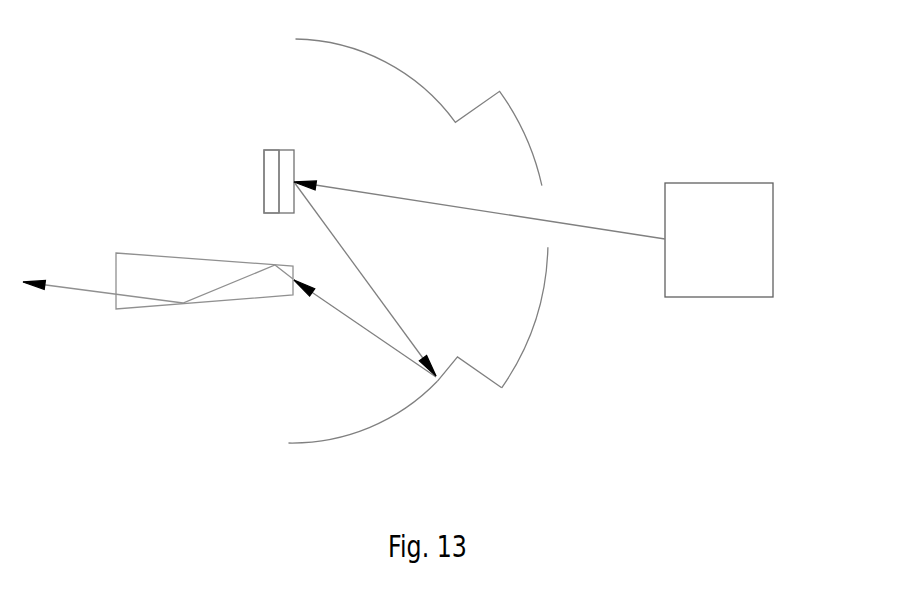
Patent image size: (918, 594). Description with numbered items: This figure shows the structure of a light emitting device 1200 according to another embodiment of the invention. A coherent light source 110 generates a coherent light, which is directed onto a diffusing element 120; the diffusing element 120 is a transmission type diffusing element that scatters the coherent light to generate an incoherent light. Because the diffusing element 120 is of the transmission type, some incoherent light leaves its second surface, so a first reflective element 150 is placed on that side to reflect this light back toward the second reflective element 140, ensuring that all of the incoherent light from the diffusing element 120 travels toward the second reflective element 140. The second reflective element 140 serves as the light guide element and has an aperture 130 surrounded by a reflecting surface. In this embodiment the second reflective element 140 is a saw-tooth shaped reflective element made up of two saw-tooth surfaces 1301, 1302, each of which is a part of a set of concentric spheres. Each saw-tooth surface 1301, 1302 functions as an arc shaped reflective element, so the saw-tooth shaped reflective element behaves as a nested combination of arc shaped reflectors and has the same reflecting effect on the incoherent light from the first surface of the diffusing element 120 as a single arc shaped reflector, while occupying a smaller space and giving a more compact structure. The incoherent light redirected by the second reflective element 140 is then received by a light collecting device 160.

The light emitting device 1200 is at (398, 263).
The coherent light source 110 is at (718, 297).
The diffusing element 120 is at (287, 150).
The first reflective element 150 is at (264, 180).
The aperture 130 is at (548, 233).
The second reflective element 140 is at (549, 362).
The saw-tooth surface 1301 is at (399, 410).
The saw-tooth surface 1302 is at (504, 387).
The light collecting device 160 is at (192, 305).